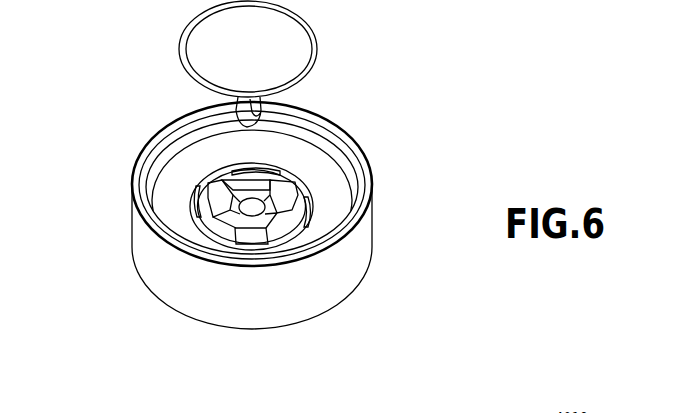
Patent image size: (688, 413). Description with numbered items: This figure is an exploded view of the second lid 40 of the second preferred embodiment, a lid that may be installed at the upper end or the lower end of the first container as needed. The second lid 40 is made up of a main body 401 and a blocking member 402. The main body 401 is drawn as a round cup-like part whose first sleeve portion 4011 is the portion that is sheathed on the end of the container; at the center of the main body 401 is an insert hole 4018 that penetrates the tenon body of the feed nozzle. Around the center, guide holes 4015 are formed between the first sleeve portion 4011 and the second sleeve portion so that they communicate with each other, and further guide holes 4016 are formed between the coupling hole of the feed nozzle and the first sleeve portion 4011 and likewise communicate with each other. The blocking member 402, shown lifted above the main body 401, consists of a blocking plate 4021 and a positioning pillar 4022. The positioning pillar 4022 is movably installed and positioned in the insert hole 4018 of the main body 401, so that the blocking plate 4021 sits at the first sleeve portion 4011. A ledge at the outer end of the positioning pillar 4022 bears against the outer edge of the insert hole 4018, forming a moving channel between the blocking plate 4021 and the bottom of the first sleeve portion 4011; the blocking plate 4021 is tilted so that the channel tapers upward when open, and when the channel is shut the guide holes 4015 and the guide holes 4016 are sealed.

The second lid 40 is at (73, 68).
The blocking member 402 is at (110, 44).
The blocking plate 4021 is at (192, 44).
The positioning pillar 4022 is at (248, 98).
The main body 401 is at (145, 245).
The first sleeve portion 4011 is at (340, 202).
The insert hole 4018 is at (249, 205).
The guide holes 4015 is at (302, 213).
The guide holes 4016 is at (253, 238).